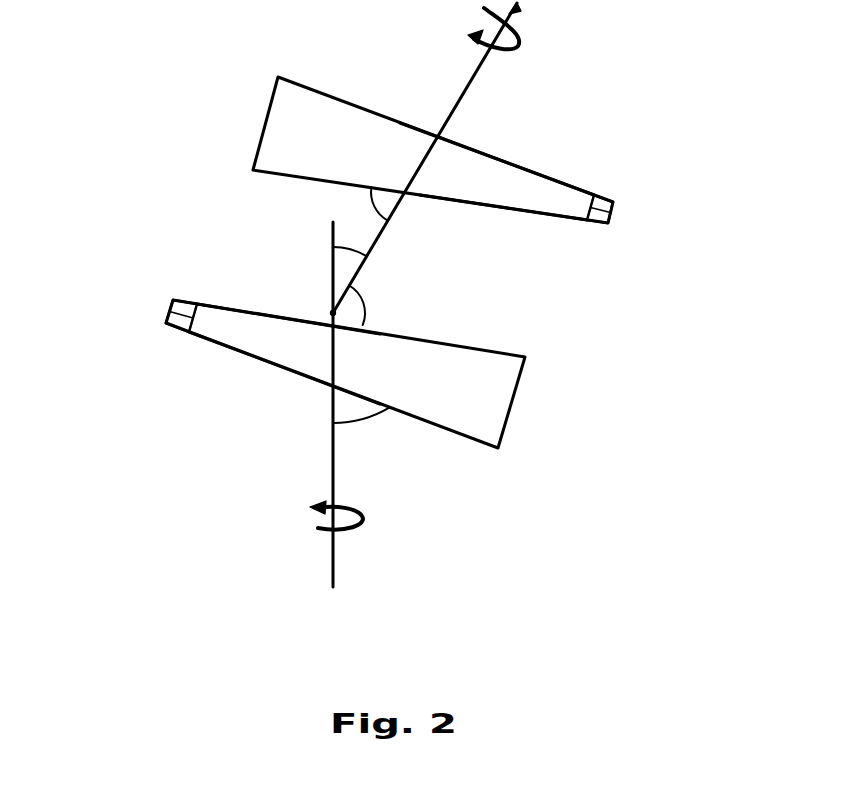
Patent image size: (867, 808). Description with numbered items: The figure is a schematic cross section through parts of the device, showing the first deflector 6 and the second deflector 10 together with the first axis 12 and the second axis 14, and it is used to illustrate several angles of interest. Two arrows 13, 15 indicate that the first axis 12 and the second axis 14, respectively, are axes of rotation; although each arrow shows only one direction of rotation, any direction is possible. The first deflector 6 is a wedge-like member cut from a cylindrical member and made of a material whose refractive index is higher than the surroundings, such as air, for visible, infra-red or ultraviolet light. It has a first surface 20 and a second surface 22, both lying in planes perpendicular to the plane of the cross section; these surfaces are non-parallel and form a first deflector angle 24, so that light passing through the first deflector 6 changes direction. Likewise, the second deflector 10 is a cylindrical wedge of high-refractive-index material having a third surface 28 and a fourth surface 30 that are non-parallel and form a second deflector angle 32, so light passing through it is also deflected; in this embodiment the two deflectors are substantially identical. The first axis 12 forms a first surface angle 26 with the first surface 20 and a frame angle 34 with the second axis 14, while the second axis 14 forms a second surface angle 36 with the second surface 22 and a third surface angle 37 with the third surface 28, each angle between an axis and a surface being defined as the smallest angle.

The first deflector 6 is at (460, 392).
The second deflector 10 is at (282, 132).
The first axis 12 is at (330, 463).
The arrow 13 is at (328, 528).
The second axis 14 is at (462, 85).
The arrow 15 is at (523, 43).
The first surface 20 is at (227, 347).
The second surface 22 is at (220, 303).
The first deflector angle 24 is at (168, 310).
The first surface angle 26 is at (365, 417).
The third surface 28 is at (550, 217).
The fourth surface 30 is at (567, 182).
The second deflector angle 32 is at (613, 203).
The frame angle 34 is at (333, 257).
The second surface angle 36 is at (358, 297).
The third surface angle 37 is at (383, 203).